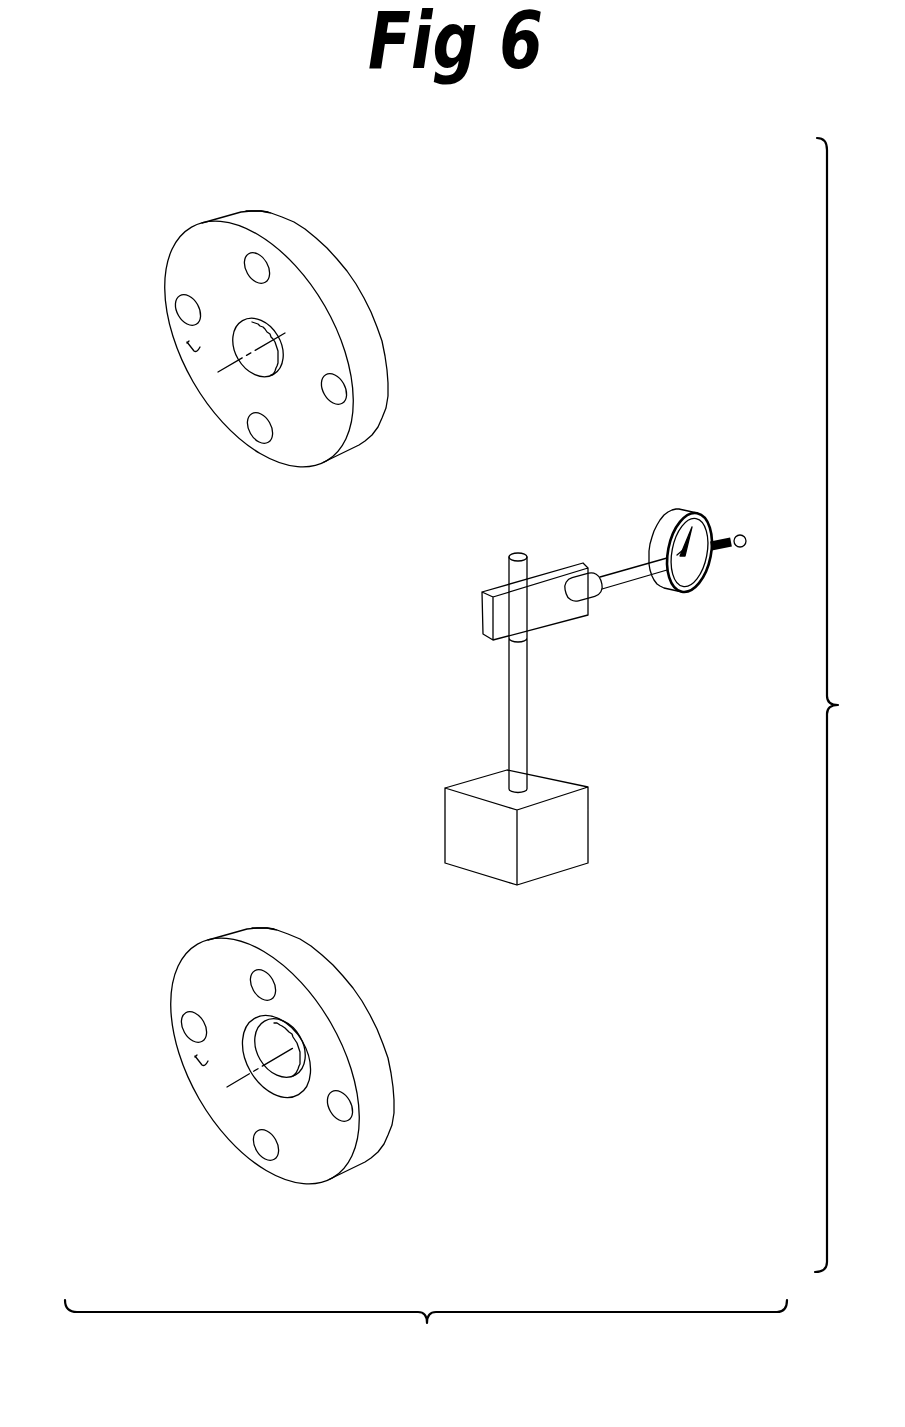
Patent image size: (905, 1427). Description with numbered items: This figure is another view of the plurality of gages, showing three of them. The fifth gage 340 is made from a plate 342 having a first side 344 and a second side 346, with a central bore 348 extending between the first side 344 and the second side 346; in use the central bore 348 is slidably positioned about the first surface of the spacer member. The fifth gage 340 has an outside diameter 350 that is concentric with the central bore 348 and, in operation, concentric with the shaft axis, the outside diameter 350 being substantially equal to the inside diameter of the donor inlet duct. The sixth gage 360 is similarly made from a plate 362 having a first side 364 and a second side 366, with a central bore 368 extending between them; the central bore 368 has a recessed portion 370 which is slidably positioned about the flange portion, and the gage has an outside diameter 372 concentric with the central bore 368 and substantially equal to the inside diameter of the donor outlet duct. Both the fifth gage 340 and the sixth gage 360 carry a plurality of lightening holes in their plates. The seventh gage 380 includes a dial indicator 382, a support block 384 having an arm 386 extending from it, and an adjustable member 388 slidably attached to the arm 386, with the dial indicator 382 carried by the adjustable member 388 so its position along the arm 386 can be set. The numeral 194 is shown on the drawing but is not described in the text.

The fifth gage 340 is at (184, 160).
The flange face 194 is at (203, 224).
The second side 346 is at (258, 211).
The outside diameter 350 is at (337, 288).
The plate 342 is at (169, 344).
The first side 344 is at (187, 343).
The central bore 348 is at (267, 363).
The sixth gage 360 is at (191, 871).
The recessed portion 370 is at (205, 972).
The second side 366 is at (264, 928).
The outside diameter 372 is at (343, 1005).
The plate 362 is at (175, 1061).
The first side 364 is at (195, 1057).
The central bore 368 is at (277, 1072).
The seventh gage 380 is at (436, 660).
The dial indicator 382 is at (672, 520).
The support block 384 is at (562, 875).
The arm 386 is at (527, 693).
The adjustable member 388 is at (618, 588).